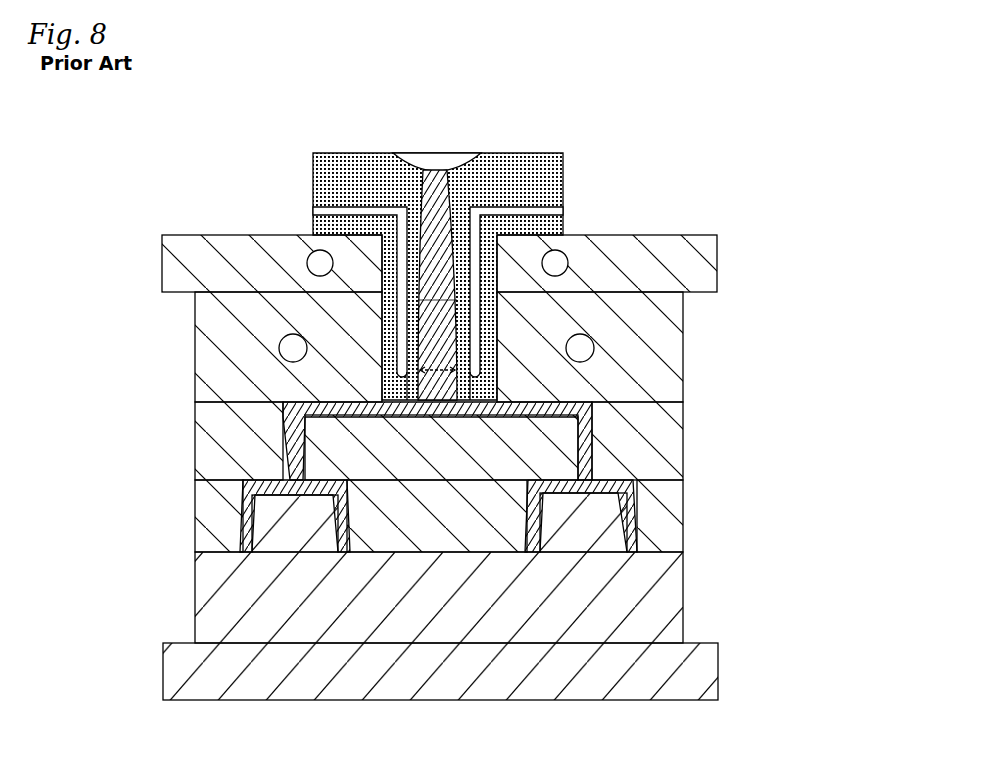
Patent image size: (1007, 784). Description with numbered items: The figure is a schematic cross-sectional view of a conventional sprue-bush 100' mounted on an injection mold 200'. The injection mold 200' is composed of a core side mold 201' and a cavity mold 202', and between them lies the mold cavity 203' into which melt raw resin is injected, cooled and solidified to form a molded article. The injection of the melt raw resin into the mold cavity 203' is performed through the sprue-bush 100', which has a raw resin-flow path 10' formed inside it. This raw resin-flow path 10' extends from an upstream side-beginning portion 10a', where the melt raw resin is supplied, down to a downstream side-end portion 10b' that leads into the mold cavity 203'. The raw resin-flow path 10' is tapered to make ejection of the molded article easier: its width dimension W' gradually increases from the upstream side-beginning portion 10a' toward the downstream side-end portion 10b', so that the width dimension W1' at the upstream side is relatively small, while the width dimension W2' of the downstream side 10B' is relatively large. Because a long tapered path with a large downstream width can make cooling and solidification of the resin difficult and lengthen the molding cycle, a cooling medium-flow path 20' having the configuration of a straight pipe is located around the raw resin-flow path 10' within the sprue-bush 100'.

The sprue-bush 100' is at (392, 235).
The raw resin-flow path 10' is at (359, 265).
The upstream side-beginning portion 10a' is at (437, 125).
The downstream side of the raw resin-flow path 10B' is at (271, 314).
The downstream side-end portion 10b' is at (272, 382).
The width dimension of the upstream side W1' is at (467, 132).
The width dimension of the raw resin-flow path W' is at (522, 285).
The width dimension of the downstream side W2' is at (572, 281).
The cooling medium-flow path 20' is at (232, 264).
The injection mold 200' is at (456, 437).
The core side mold 201' is at (508, 582).
The cavity mold 202' is at (524, 422).
The mold cavity 203' is at (348, 477).